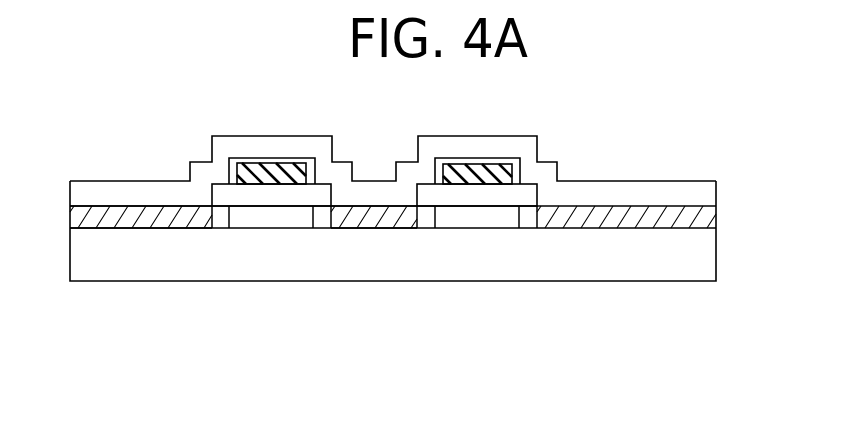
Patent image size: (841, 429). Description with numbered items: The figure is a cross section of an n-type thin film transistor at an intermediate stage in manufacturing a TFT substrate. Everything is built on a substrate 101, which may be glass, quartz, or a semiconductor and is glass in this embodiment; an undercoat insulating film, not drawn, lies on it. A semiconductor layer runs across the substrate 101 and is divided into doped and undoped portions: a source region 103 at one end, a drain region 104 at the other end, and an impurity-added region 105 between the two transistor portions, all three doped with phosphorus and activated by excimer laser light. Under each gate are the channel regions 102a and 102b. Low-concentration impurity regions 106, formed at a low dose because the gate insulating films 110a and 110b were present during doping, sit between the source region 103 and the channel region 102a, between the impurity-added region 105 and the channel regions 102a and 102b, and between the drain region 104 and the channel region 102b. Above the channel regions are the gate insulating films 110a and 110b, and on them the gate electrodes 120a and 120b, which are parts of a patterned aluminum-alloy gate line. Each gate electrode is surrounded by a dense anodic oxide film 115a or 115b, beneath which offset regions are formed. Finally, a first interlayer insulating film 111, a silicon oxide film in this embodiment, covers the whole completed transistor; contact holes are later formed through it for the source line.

The substrate 101 is at (658, 260).
The channel region 102a is at (262, 214).
The channel region 102b is at (465, 215).
The source region 103 is at (140, 217).
The drain region 104 is at (590, 215).
The impurity-added region 105 is at (353, 215).
The low-concentration impurity regions 106 is at (219, 218).
The gate insulating film 110a is at (323, 190).
The gate insulating film 110b is at (540, 188).
The first interlayer insulating film 111 is at (153, 190).
The dense anodic oxide film 115a is at (235, 158).
The dense anodic oxide film 115b is at (517, 168).
The gate electrode 120a is at (263, 170).
The gate electrode 120b is at (482, 170).